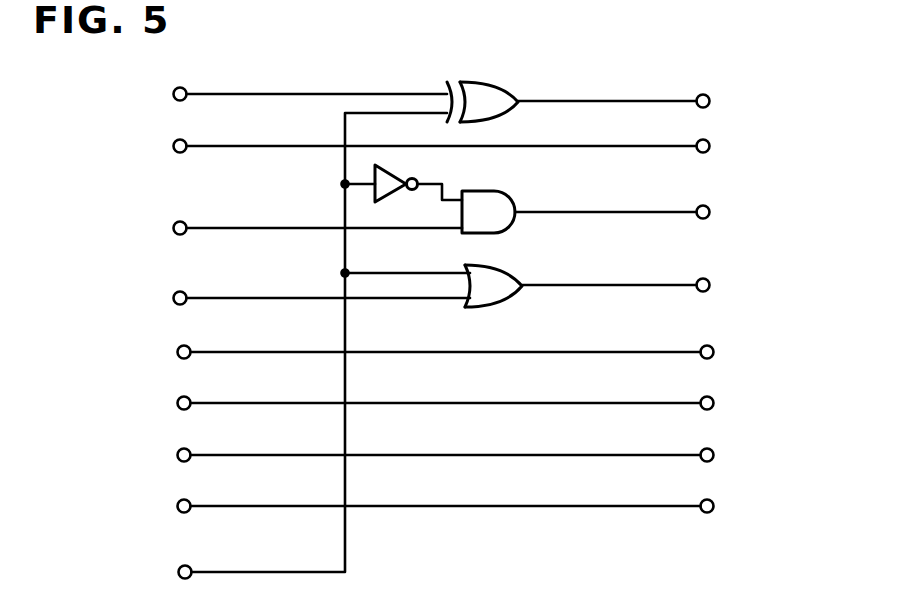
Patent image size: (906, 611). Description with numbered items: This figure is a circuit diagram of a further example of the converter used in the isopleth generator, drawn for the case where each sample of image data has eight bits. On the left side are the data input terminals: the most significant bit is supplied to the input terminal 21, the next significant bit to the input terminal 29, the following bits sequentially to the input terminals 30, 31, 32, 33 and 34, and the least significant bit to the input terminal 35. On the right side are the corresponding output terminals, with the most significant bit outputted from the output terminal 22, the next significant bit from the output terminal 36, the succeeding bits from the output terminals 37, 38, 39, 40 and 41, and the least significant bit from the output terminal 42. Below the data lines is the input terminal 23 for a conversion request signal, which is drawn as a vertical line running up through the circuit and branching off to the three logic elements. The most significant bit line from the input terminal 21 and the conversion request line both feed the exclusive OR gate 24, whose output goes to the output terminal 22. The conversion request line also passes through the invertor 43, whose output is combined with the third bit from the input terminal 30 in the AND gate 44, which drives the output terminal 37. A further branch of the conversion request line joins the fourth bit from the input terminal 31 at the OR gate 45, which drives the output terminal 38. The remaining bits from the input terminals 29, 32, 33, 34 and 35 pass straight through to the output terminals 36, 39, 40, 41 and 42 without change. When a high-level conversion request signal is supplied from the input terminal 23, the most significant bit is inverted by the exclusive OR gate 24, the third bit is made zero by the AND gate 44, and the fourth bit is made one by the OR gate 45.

The input terminal 21 is at (173, 94).
The output terminal 22 is at (710, 101).
The input terminal for a conversion request signal 23 is at (178, 572).
The exclusive OR gate 24 is at (512, 86).
The input terminal 29 is at (173, 146).
The input terminal 30 is at (173, 228).
The input terminal 31 is at (173, 298).
The input terminal 32 is at (177, 352).
The input terminal 33 is at (177, 403).
The input terminal 34 is at (177, 455).
The input terminal 35 is at (177, 506).
The output terminal 36 is at (710, 146).
The output terminal 37 is at (710, 212).
The output terminal 38 is at (710, 285).
The output terminal 39 is at (714, 352).
The output terminal 40 is at (714, 403).
The output terminal 41 is at (714, 455).
The output terminal 42 is at (714, 506).
The invertor 43 is at (393, 172).
The AND gate 44 is at (508, 192).
The OR gate 45 is at (510, 268).